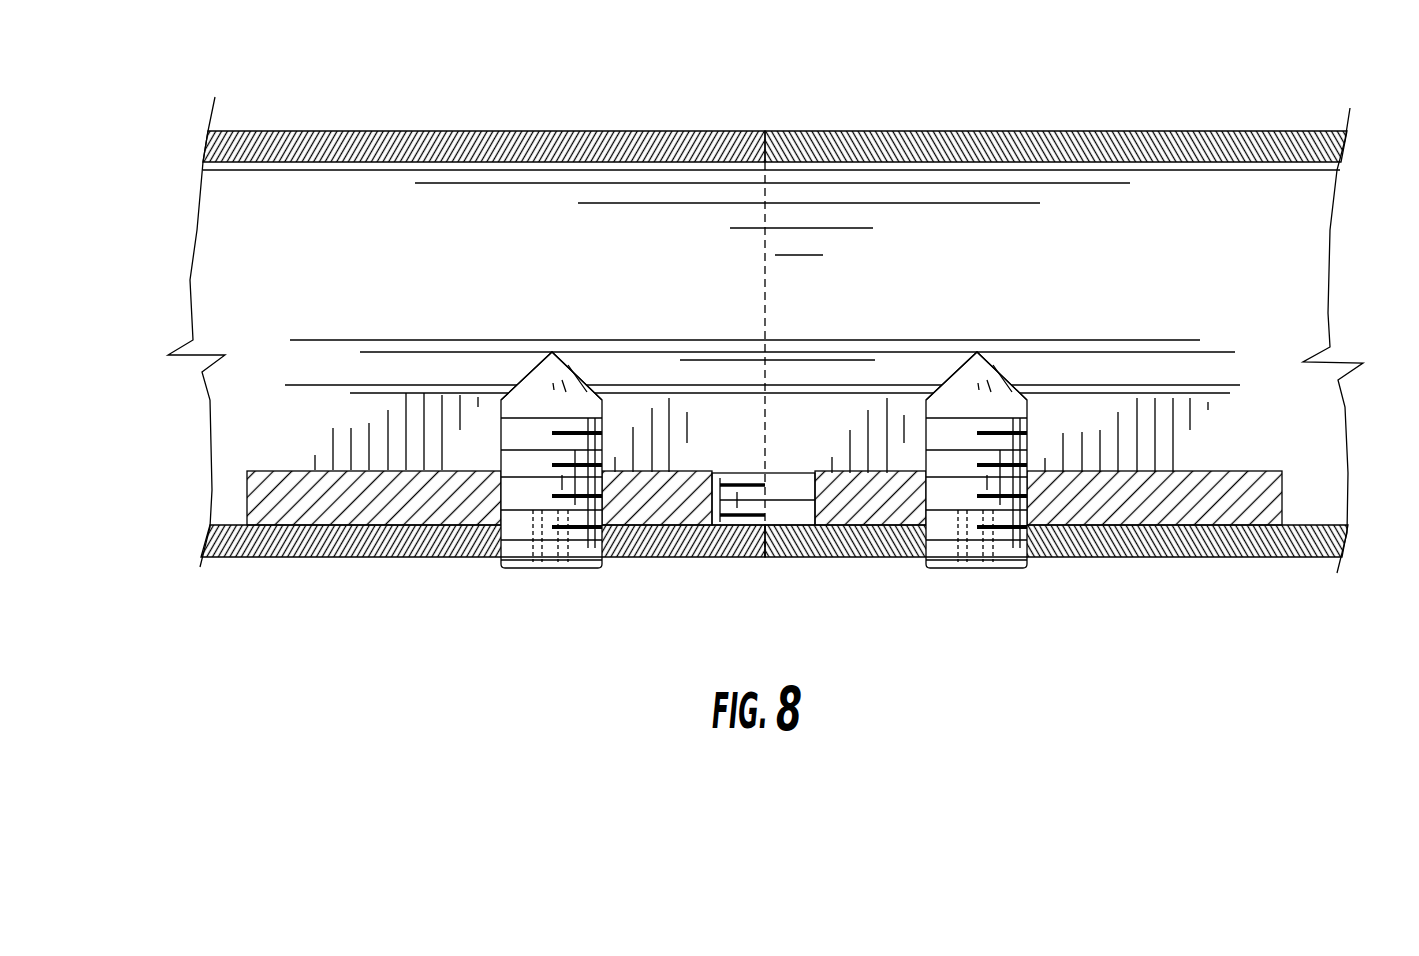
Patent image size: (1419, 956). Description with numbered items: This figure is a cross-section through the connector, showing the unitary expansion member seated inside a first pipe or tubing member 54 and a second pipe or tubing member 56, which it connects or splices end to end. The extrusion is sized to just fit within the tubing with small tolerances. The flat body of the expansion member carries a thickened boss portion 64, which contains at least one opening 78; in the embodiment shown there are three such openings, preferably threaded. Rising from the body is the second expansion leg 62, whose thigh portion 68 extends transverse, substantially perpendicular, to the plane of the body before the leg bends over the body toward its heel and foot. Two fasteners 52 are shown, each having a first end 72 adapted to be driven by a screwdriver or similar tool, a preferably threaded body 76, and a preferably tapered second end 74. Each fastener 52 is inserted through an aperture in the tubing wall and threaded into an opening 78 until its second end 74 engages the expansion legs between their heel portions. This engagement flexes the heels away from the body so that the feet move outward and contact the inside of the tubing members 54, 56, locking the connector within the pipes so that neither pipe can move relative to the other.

The fastener 52 is at (583, 596).
The first pipe or tubing member 54 is at (340, 148).
The second pipe or tubing member 56 is at (1207, 148).
The second expansion leg 62 is at (278, 250).
The boss portion 64 is at (400, 505).
The thigh portion 68 is at (328, 440).
The first end 72 is at (535, 568).
The second end 74 is at (572, 372).
The body 76 is at (590, 455).
The opening 78 is at (790, 515).